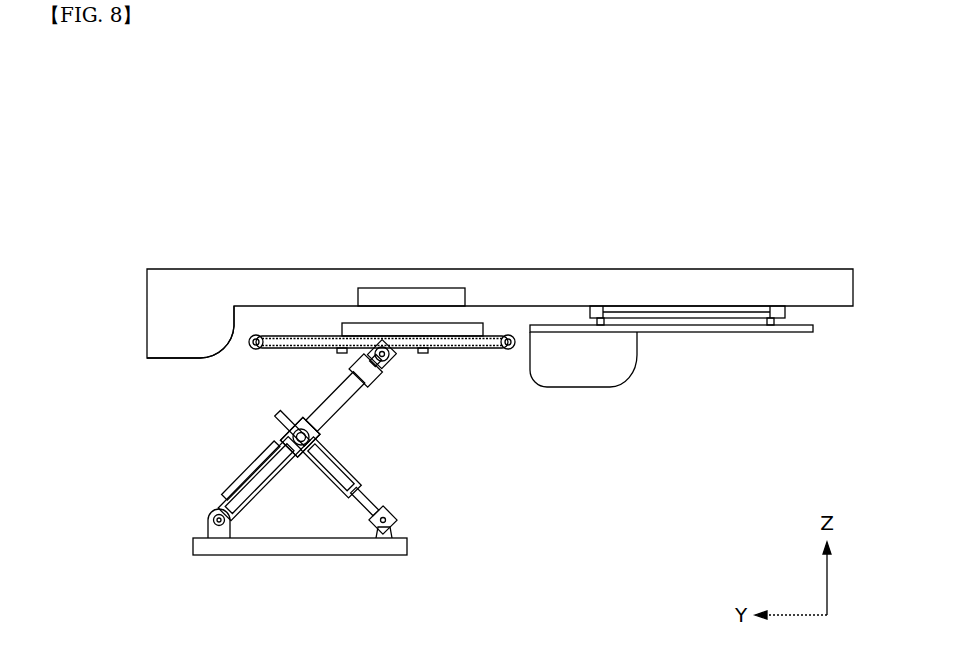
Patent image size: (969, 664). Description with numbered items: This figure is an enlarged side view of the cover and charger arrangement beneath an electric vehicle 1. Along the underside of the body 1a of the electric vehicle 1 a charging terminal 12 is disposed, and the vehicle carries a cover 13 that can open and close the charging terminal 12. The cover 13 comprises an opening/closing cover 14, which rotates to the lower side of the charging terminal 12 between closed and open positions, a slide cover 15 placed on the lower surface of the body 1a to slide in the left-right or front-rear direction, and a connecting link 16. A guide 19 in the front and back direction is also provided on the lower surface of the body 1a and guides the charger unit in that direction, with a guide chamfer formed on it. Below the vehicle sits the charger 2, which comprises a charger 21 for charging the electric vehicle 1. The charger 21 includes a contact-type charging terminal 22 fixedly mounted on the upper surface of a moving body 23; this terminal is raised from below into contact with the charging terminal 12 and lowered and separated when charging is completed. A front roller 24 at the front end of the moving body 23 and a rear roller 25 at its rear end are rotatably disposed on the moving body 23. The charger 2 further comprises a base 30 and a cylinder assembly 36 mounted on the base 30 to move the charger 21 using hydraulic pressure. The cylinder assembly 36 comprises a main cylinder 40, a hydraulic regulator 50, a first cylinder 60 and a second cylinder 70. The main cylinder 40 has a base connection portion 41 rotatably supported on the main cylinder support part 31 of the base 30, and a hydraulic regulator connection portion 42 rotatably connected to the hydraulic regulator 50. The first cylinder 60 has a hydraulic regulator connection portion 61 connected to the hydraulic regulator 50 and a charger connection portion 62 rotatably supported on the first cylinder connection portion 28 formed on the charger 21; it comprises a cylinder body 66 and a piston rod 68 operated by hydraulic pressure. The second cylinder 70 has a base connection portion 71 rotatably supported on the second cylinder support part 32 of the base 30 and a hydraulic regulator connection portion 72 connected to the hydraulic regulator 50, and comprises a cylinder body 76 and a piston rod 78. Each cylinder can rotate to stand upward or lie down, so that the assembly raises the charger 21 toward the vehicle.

The electric vehicle 1 is at (662, 184).
The body 1a is at (286, 290).
The charger 2 is at (433, 523).
The charging terminal 12 is at (435, 296).
The cover 13 is at (798, 203).
The opening/closing cover 14 is at (600, 306).
The slide cover 15 is at (756, 322).
The connecting link 16 is at (713, 310).
The guide in the front and back direction 19 is at (173, 350).
The charger 21 is at (547, 208).
The contact-type charging terminal 22 is at (468, 326).
The moving body 23 is at (492, 338).
The front roller 24 is at (252, 335).
The rear roller 25 is at (512, 337).
The first cylinder connection portion 28 is at (390, 352).
The base 30 is at (340, 548).
The main cylinder support part 31 is at (212, 521).
The second cylinder support part 32 is at (392, 540).
The cylinder assembly 36 is at (494, 368).
The main cylinder 40 is at (332, 470).
The base connection portion 41 is at (219, 527).
The hydraulic regulator connection portion 42 is at (287, 428).
The hydraulic regulator 50 is at (325, 437).
The first cylinder 60 is at (460, 355).
The hydraulic regulator connection portion 61 is at (296, 420).
The charger connection portion 62 is at (378, 350).
The cylinder body 66 is at (352, 403).
The piston rod 68 is at (375, 377).
The second cylinder 70 is at (460, 465).
The base connection portion 71 is at (393, 521).
The hydraulic regulator connection portion 72 is at (290, 455).
The cylinder body 76 is at (366, 477).
The piston rod 78 is at (385, 500).